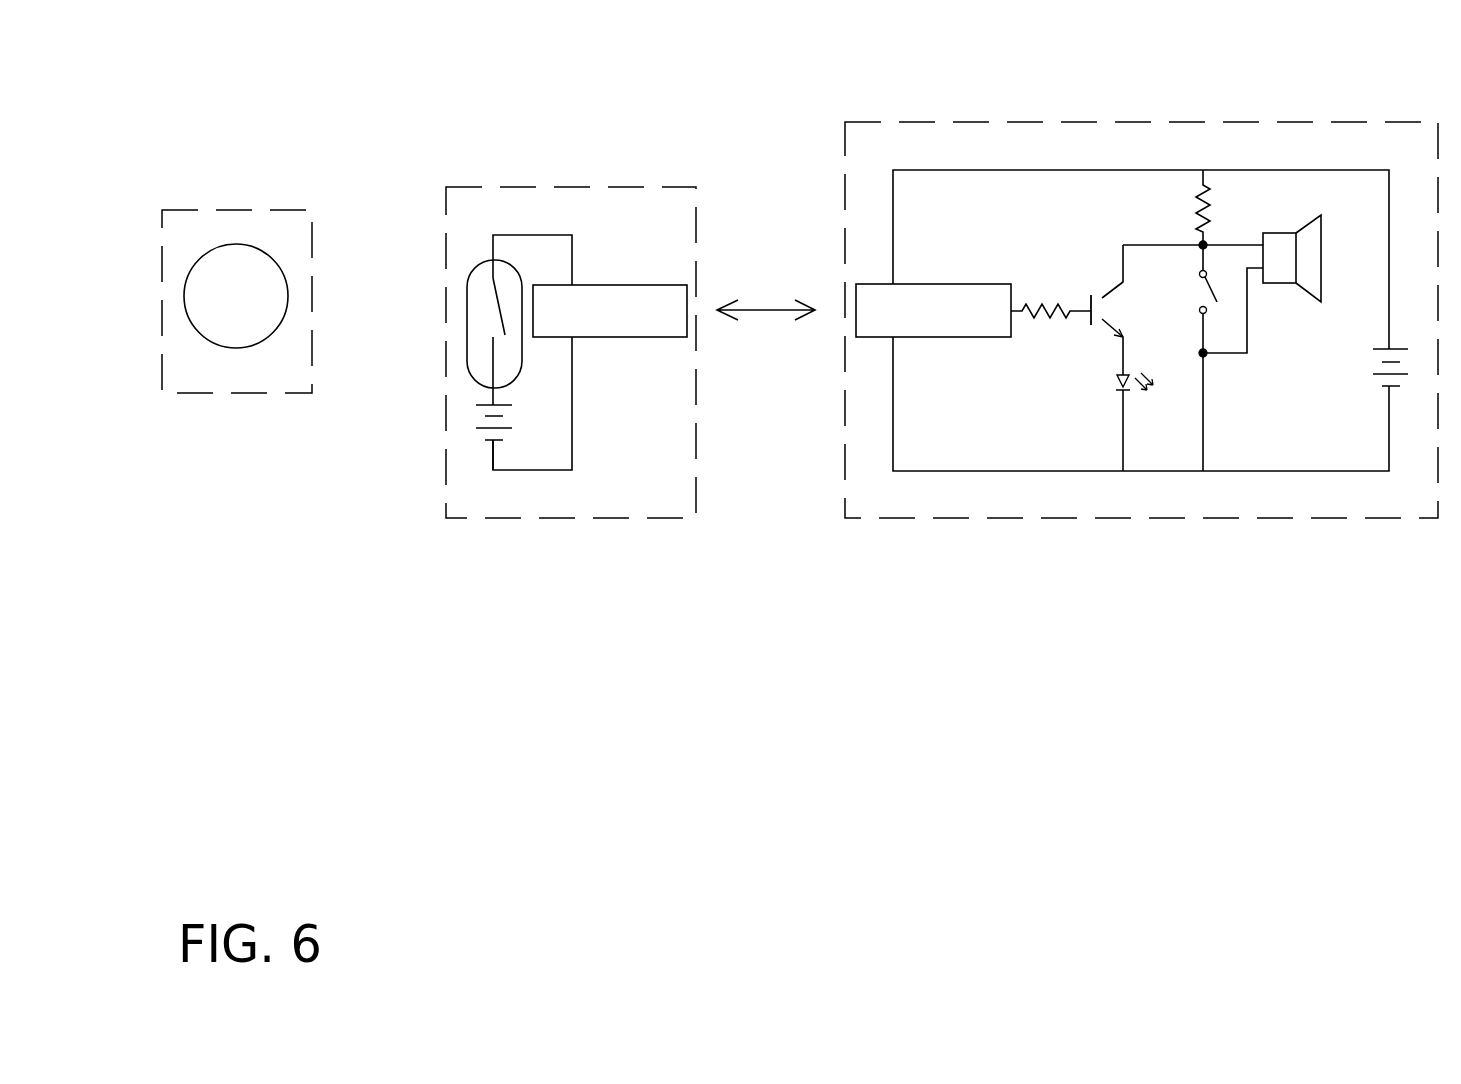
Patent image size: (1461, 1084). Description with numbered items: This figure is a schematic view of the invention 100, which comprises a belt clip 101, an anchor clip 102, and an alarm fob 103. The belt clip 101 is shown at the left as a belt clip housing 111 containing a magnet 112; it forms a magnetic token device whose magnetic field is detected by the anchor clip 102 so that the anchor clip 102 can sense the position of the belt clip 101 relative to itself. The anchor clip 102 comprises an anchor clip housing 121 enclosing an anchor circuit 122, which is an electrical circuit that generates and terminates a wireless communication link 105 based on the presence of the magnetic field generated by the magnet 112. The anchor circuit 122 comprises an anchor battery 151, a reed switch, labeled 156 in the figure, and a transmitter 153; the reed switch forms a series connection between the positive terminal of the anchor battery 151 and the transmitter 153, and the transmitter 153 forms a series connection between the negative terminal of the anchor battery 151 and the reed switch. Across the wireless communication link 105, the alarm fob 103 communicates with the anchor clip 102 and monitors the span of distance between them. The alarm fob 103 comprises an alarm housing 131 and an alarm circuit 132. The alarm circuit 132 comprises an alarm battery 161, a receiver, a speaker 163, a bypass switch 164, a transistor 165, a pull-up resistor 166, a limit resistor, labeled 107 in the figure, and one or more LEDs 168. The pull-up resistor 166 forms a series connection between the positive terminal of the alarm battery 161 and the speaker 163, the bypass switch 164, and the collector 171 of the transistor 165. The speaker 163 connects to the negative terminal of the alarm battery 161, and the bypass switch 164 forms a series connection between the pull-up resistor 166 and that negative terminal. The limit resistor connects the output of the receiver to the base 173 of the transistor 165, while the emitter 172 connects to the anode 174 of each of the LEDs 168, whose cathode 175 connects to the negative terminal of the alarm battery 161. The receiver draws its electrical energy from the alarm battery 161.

The invention 100 is at (300, 98).
The belt clip 101 is at (222, 345).
The belt clip housing 111 is at (173, 393).
The magnet 112 is at (257, 280).
The anchor clip 102 is at (772, 189).
The anchor clip housing 121 is at (530, 518).
The anchor circuit 122 is at (652, 368).
The reed switch 156 is at (513, 270).
The transmitter 153 is at (598, 288).
The anchor battery 151 is at (512, 422).
The wireless communication link 105 is at (767, 310).
The alarm circuit 132 is at (875, 138).
The alarm fob 103 is at (885, 530).
The alarm housing 131 is at (1200, 517).
The base resistor 107 is at (1040, 318).
The transistor 165 is at (1092, 317).
The collector 171 is at (1125, 277).
The base 173 is at (1080, 318).
The anode 174 is at (1120, 365).
The cathode 175 is at (1120, 435).
The LEDs 168 is at (1155, 380).
The pull-up resistor 166 is at (1215, 210).
The bypass switch 164 is at (1198, 302).
The emitter 172 is at (1132, 341).
The speaker 163 is at (1297, 227).
The alarm battery 161 is at (1375, 378).